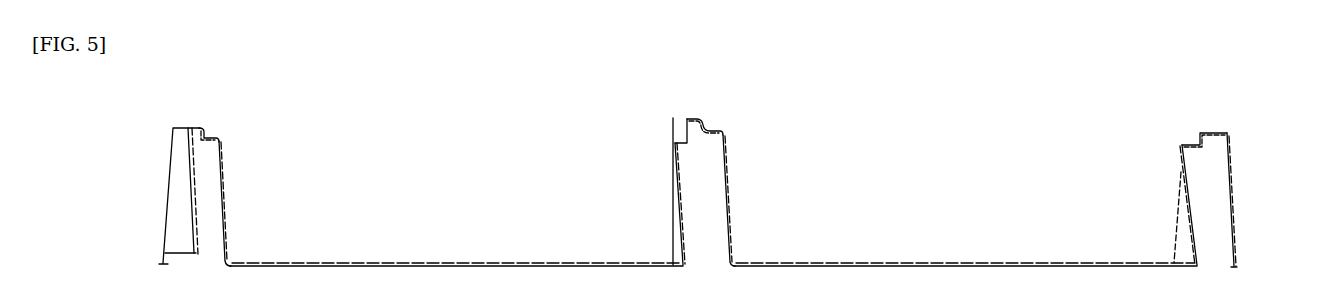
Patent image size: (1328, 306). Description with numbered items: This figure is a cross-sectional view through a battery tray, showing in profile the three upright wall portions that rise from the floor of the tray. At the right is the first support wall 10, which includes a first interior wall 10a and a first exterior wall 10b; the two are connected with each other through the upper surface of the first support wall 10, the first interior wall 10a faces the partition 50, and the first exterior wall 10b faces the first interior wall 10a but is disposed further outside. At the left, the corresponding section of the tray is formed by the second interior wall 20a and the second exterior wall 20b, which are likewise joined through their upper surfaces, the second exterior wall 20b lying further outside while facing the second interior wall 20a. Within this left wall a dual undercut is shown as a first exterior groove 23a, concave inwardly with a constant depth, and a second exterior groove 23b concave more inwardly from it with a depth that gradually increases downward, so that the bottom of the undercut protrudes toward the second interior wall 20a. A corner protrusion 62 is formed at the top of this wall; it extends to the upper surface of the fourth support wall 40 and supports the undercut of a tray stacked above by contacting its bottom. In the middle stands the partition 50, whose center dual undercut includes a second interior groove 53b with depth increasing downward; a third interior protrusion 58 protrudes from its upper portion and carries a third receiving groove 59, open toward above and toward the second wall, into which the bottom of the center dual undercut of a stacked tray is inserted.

The first support wall 10 is at (1214, 200).
The first interior wall 10a is at (1180, 160).
The first exterior wall 10b is at (1235, 228).
The second interior wall 20a is at (222, 208).
The second exterior wall 20b is at (170, 163).
The first exterior groove 23a is at (188, 187).
The second exterior groove 23b is at (192, 215).
The fourth support wall 40 is at (202, 176).
The partition 50 is at (709, 173).
The second interior groove 53b is at (675, 222).
The third interior protrusion 58 is at (703, 107).
The third receiving groove 59 is at (680, 131).
The corner protrusion 62 is at (197, 126).